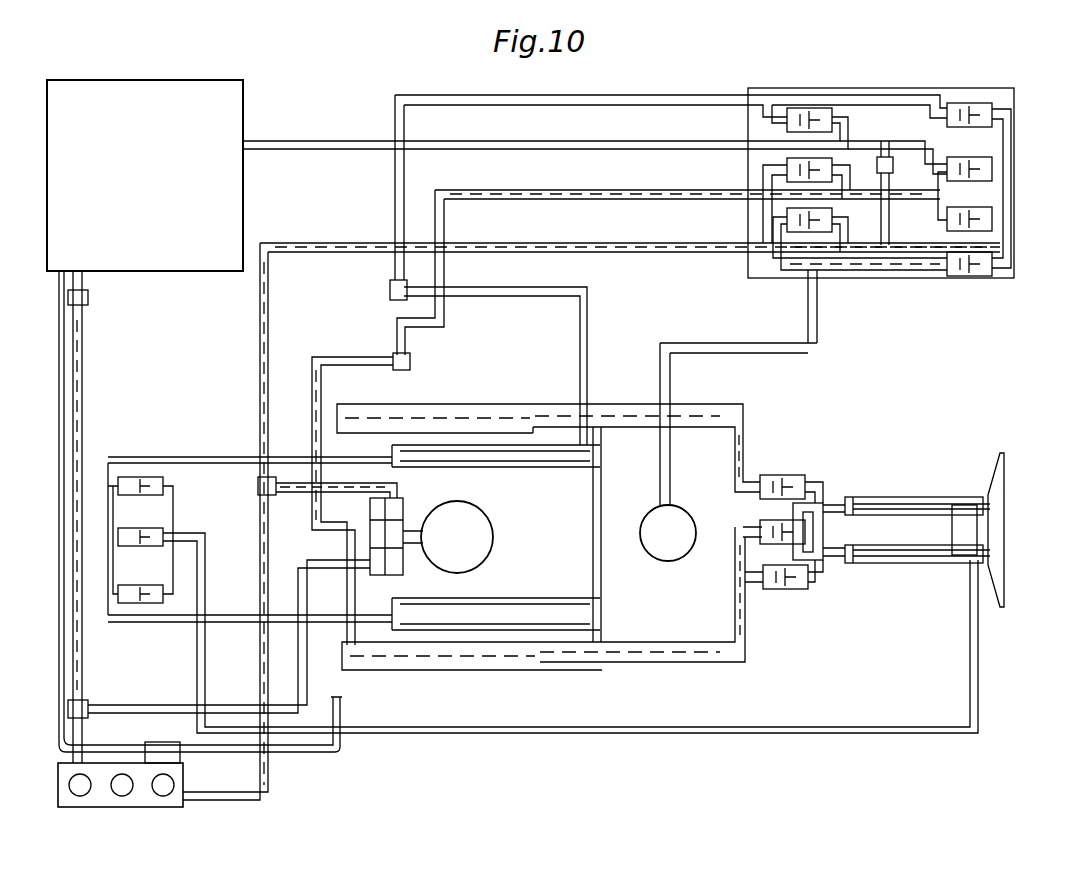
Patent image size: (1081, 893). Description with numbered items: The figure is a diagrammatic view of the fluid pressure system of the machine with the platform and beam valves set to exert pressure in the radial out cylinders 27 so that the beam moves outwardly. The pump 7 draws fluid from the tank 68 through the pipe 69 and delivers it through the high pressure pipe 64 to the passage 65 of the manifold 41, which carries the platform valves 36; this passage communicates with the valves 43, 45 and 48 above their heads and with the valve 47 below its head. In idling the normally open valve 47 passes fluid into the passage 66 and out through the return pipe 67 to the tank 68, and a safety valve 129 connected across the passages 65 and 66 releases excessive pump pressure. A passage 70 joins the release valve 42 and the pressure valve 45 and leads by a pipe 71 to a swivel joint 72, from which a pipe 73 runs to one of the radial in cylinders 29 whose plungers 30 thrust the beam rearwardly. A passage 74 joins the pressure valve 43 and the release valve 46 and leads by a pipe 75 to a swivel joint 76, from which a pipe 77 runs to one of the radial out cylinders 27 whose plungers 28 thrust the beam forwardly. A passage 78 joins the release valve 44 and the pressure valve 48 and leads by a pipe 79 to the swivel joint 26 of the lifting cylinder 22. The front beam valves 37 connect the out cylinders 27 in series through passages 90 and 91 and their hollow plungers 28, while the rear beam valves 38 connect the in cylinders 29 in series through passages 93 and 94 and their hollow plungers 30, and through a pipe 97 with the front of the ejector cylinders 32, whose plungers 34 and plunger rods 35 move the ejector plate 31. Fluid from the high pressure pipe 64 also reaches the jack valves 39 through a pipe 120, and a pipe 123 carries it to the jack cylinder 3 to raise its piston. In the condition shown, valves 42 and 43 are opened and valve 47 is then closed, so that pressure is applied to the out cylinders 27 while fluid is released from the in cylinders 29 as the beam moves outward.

The cylinder 3 is at (494, 538).
The fluid pressure pump 7 is at (133, 808).
The cylinder 22 is at (697, 518).
The swivel joint 26 is at (738, 412).
The radial out cylinders 27 is at (435, 675).
The plungers 28 is at (655, 640).
The radial in cylinders 29 is at (572, 470).
The plungers 30 is at (496, 537).
The ejector plate 31 is at (990, 480).
The ejector cylinders 32 is at (896, 515).
The plungers 34 is at (855, 515).
The plunger rods 35 is at (952, 528).
The platform valves 36 is at (978, 276).
The front beam valves 37 is at (805, 589).
The rear beam valves 38 is at (125, 560).
The jack valves 39 is at (405, 575).
The manifold 41 is at (1000, 280).
The release valve 42 is at (787, 118).
The pressure valve 43 is at (820, 166).
The release valve 44 is at (787, 222).
The pressure valve 45 is at (992, 110).
The release valve 46 is at (992, 168).
The valve 47 is at (992, 222).
The pressure valve 48 is at (992, 266).
The high pressure pipe 64 is at (270, 292).
The passage 65 is at (857, 272).
The passage 66 is at (880, 140).
The return pipe 67 is at (268, 143).
The tank 68 is at (243, 86).
The pipe 69 is at (84, 400).
The passage 70 is at (758, 90).
The pipe 71 is at (488, 95).
The swivel joint 72 is at (411, 282).
The pipe 73 is at (547, 280).
The passage 74 is at (896, 192).
The pipe 75 is at (530, 196).
The swivel joint 76 is at (412, 362).
The pipe 77 is at (312, 402).
The passage 78 is at (887, 270).
The pipe 79 is at (808, 328).
The passage 90 is at (750, 648).
The passage 91 is at (745, 443).
The passage 93 is at (225, 460).
The passage 94 is at (228, 612).
The pipe 97 is at (970, 618).
The pipe 120 is at (292, 496).
The pipe 123 is at (418, 525).
The safety valve 129 is at (893, 157).